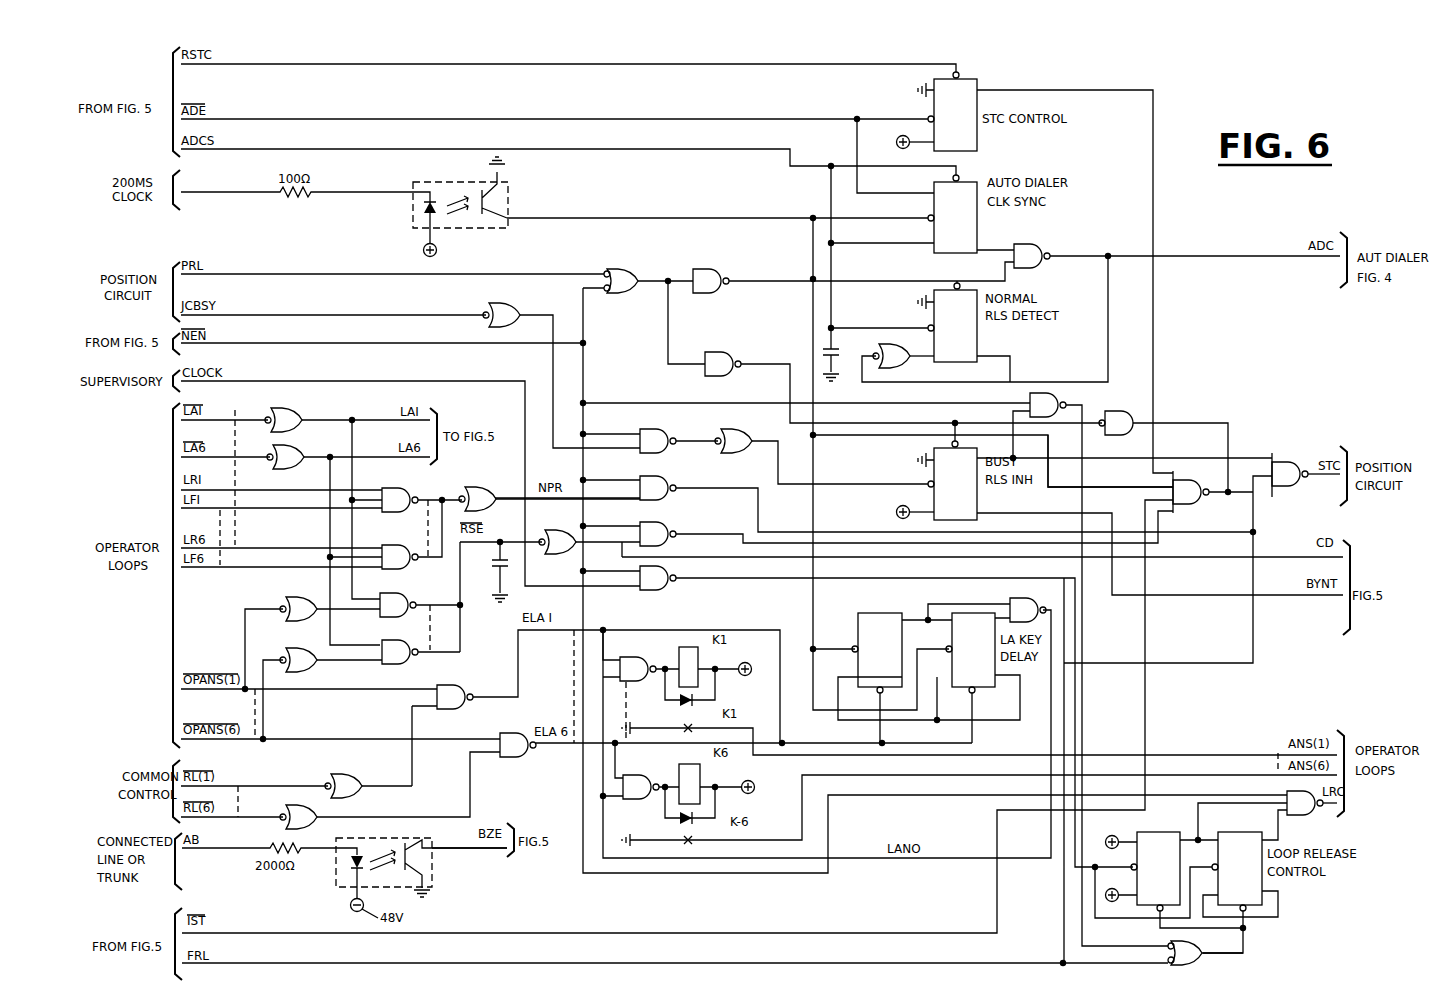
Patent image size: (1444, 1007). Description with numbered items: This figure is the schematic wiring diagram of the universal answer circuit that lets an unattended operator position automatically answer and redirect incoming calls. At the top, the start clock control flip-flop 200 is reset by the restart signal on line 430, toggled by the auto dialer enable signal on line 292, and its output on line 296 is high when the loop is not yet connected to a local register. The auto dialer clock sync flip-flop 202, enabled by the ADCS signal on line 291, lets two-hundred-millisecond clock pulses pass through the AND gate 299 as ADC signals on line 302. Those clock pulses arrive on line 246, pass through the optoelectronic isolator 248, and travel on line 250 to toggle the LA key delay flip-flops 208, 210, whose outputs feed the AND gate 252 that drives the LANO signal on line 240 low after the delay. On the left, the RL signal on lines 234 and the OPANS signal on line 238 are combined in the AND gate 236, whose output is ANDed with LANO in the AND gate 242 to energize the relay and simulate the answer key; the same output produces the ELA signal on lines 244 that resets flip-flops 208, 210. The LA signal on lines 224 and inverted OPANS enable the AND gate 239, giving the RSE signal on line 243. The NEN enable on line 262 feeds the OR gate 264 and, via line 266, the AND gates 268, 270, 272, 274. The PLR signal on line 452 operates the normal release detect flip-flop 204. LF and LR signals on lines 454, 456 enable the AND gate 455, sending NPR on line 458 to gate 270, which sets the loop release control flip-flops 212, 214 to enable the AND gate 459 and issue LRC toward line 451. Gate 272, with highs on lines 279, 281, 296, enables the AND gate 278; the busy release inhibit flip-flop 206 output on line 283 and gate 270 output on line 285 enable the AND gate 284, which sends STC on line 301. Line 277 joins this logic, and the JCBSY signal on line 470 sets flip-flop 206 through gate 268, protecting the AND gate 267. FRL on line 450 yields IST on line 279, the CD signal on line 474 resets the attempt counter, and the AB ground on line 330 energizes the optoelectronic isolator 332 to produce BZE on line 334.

The start clock control flip-flop 200 is at (978, 78).
The auto dialer clock sync flip-flop 202 is at (978, 240).
The normal release detect flip-flop 204 is at (980, 348).
The busy release inhibit flip-flop 206 is at (930, 497).
The LA key delay flip-flop 208 is at (873, 612).
The LA key delay flip-flop 210 is at (948, 602).
The loop release control flip-flop 212 is at (1145, 832).
The loop release control flip-flop 214 is at (1278, 889).
The LA signal lines 224 is at (244, 416).
The RL signal lines 234 is at (244, 782).
The AND gate 236 is at (453, 680).
The OPANS line 238 is at (389, 748).
The AND gate 239 is at (388, 597).
The LANO line 240 is at (955, 870).
The AND gate 242 is at (636, 646).
The RSE line 243 is at (517, 531).
The ELA signal lines 244 is at (743, 625).
The 200 millisecond clock line 246 is at (375, 193).
The optoelectronic isolator 248 is at (510, 200).
The isolator output line 250 is at (690, 217).
The AND gate 252 is at (1012, 600).
The NEN line 262 is at (318, 343).
The OR gate 264 is at (614, 268).
The NEN line 266 is at (598, 342).
The AND gate 267 is at (1068, 400).
The AND gate 268 is at (668, 431).
The AND gate 270 is at (668, 479).
The AND gate 272 is at (680, 527).
The AND gate 274 is at (672, 590).
The lead 277 is at (880, 540).
The AND gate 278 is at (1190, 505).
The IST line 279 is at (1140, 520).
The line 281 is at (1135, 482).
The line 283 is at (1238, 445).
The AND gate 284 is at (1290, 492).
The line 285 is at (1185, 540).
The ADCS line 291 is at (612, 152).
The ADE line 292 is at (345, 122).
The line 296 is at (1155, 224).
The AND gate 299 is at (1035, 272).
The STC line 301 is at (1305, 457).
The ADC line 302 is at (1200, 257).
The AB line 330 is at (218, 850).
The optoelectronic isolator 332 is at (333, 883).
The BZE line 334 is at (480, 860).
The RSTC line 430 is at (545, 65).
The FRL line 450 is at (258, 970).
The LRC lead 451 is at (1345, 810).
The PLR line 452 is at (320, 275).
The LF signal lines 454 is at (312, 518).
The AND gate 455 is at (423, 486).
The LR signal line 456 is at (297, 559).
The NPR line 458 is at (512, 488).
The AND gate 459 is at (1296, 815).
The JCBSY/BYNT line 470 is at (333, 314).
The CD line 474 is at (1264, 557).